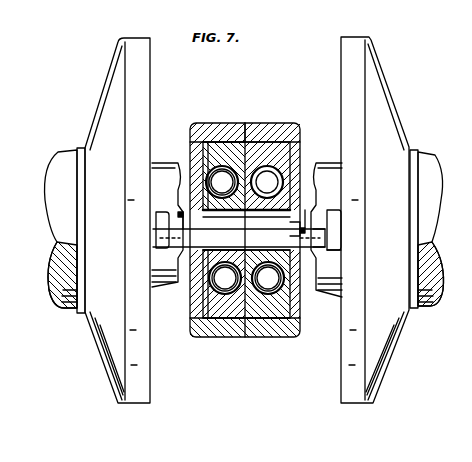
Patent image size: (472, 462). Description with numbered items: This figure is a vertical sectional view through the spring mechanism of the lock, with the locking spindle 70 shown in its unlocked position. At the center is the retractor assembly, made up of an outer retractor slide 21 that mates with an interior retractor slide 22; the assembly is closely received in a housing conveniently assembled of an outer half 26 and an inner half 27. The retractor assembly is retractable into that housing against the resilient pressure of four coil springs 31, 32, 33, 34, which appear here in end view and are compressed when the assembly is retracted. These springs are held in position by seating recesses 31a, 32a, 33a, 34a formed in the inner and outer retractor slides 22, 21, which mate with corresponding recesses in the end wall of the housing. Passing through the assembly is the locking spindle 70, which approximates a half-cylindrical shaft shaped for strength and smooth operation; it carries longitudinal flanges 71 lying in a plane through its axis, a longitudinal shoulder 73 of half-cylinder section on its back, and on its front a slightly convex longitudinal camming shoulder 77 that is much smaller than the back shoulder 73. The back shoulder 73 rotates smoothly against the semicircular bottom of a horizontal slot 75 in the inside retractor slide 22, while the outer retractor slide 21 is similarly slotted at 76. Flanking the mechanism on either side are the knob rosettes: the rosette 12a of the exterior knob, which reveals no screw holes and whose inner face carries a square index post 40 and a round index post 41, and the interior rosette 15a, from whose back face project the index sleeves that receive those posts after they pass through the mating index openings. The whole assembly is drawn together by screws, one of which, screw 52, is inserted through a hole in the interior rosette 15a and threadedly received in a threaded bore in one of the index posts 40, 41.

The rosette 12a is at (399, 117).
The interior rosette 15a is at (96, 118).
The outer retractor slide 21 is at (265, 152).
The interior retractor slide 22 is at (250, 338).
The outer half 26 is at (250, 127).
The inner half 27 is at (229, 128).
The coil spring 31 is at (291, 129).
The seating recess 31a is at (293, 227).
The coil spring 32 is at (294, 309).
The seating recess 32a is at (268, 294).
The coil spring 33 is at (193, 207).
The seating recess 33a is at (222, 165).
The coil spring 34 is at (200, 313).
The seating recess 34a is at (225, 294).
The square index post 40 is at (180, 213).
The round index post 41 is at (155, 228).
The screw 52 is at (56, 237).
The locking spindle 70 is at (318, 228).
The longitudinal flanges 71 is at (331, 262).
The longitudinal shoulder 73 is at (178, 256).
The horizontal slot 75 is at (182, 210).
The slot 76 is at (300, 256).
The longitudinal camming shoulder 77 is at (300, 230).